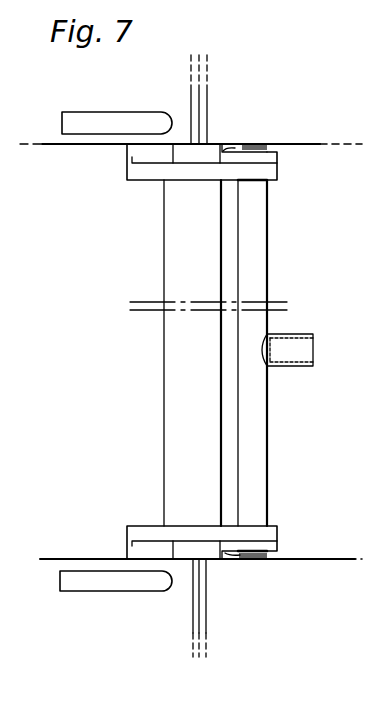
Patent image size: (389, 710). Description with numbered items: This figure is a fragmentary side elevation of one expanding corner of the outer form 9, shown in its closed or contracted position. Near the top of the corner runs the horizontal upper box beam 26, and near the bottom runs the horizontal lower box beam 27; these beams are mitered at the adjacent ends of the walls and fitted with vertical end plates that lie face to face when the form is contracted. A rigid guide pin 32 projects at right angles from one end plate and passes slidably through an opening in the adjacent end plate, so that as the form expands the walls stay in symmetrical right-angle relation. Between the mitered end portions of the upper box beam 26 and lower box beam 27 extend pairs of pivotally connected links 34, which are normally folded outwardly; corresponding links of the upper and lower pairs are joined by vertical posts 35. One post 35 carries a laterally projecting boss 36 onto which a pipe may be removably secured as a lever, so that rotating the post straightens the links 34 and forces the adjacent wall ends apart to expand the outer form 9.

The outer form 9 is at (301, 150).
The upper box beam 26 is at (45, 121).
The lower box beam 27 is at (278, 585).
The guide pin 32 is at (102, 122).
The links 34 is at (232, 158).
The vertical posts 35 is at (210, 428).
The boss 36 is at (310, 352).